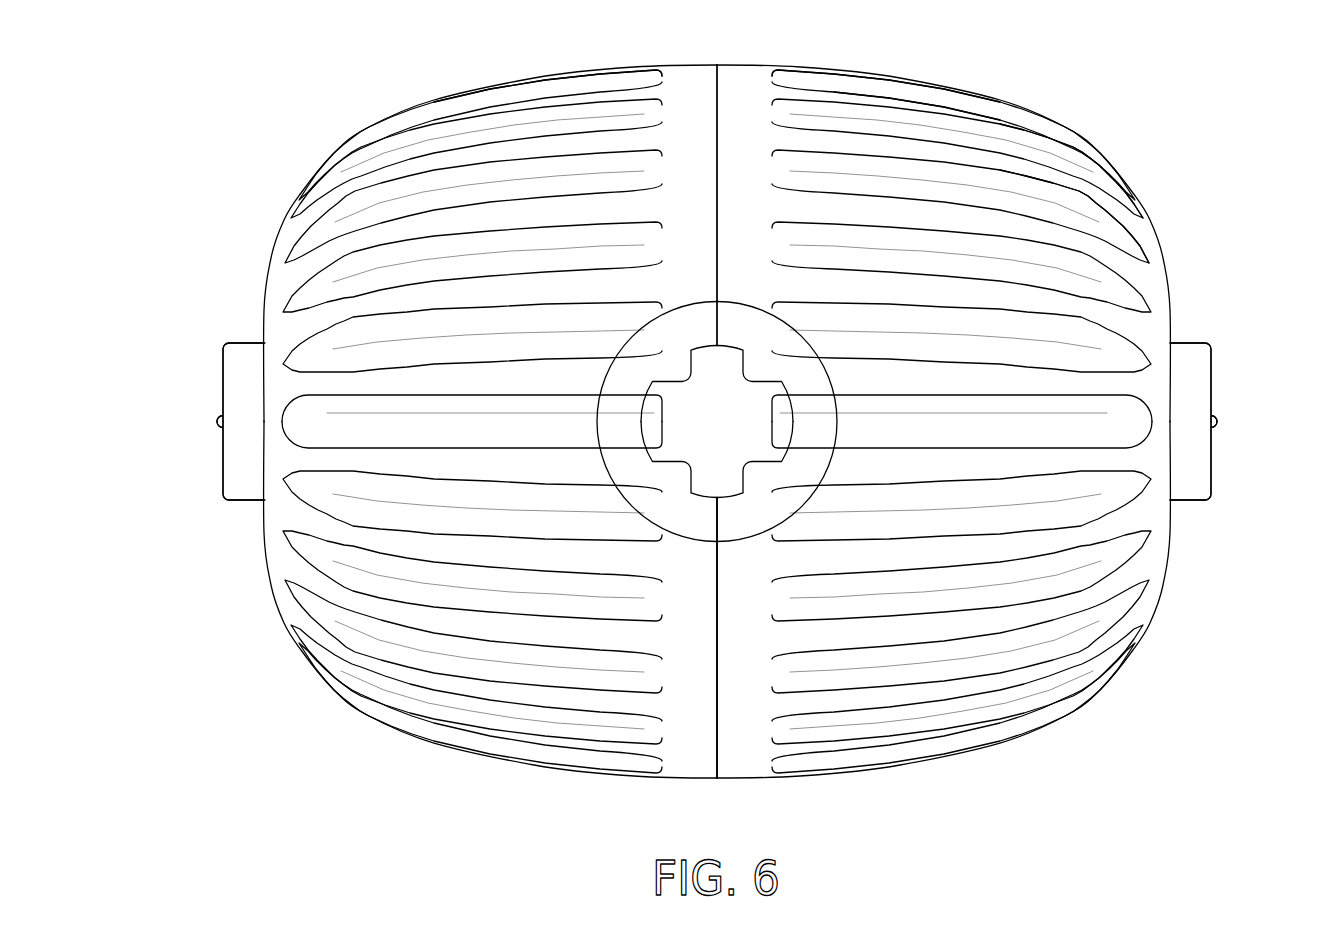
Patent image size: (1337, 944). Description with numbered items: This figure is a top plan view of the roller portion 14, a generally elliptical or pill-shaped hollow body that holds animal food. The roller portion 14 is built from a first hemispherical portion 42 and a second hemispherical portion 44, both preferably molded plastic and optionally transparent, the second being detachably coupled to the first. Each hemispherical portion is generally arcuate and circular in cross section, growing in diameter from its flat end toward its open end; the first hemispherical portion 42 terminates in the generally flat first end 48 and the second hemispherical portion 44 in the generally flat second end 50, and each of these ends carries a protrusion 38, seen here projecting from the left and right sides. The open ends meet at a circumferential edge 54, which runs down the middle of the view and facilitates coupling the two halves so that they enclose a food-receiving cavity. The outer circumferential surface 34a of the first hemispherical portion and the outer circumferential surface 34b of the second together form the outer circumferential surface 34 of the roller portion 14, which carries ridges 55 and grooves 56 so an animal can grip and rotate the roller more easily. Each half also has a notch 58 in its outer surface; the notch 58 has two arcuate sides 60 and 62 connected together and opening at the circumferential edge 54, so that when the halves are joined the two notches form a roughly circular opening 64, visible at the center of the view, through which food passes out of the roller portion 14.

The roller portion 14 is at (712, 399).
The outer circumferential surface 34 is at (751, 65).
The outer circumferential surface 34a is at (1002, 99).
The outer circumferential surface 34b is at (483, 88).
The protrusion 38 is at (223, 379).
The first hemispherical portion 42 is at (882, 70).
The second hemispherical portion 44 is at (589, 72).
The first end 48 is at (1167, 262).
The second end 50 is at (268, 258).
The circumferential edge 54 is at (718, 743).
The ridges 55 is at (1073, 184).
The grooves 56 is at (1100, 224).
The notch 58 is at (790, 380).
The arcuate side 60 is at (790, 462).
The arcuate side 62 is at (691, 350).
The opening 64 is at (680, 483).